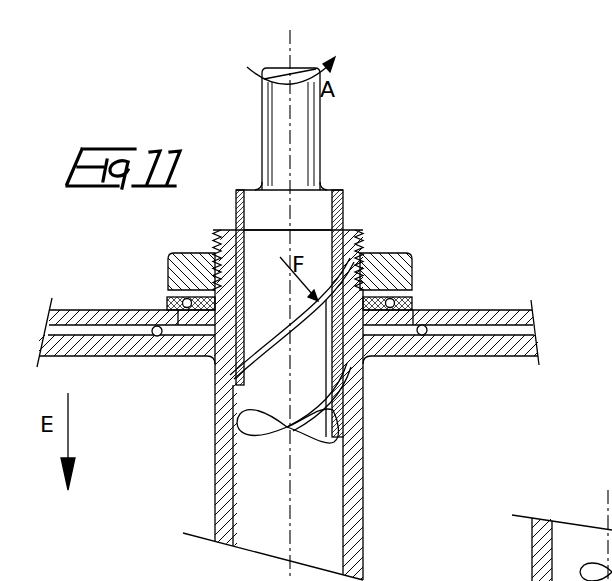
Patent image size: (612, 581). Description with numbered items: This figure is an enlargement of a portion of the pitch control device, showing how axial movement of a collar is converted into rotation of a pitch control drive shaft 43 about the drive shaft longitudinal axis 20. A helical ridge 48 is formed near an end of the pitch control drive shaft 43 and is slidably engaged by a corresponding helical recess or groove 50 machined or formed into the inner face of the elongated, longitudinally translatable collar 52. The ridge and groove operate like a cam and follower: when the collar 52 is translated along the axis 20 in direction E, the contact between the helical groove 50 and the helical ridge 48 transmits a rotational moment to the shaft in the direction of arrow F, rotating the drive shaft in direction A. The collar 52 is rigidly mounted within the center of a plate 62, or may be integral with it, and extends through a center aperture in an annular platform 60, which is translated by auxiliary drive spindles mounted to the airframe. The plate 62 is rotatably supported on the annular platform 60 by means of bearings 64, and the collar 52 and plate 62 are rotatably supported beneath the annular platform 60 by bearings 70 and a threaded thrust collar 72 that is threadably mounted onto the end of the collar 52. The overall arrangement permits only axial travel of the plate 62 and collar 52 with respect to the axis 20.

The drive shaft longitudinal axis 20 is at (292, 52).
The pitch control drive shaft 43 is at (305, 210).
The helical ridge 48 is at (262, 332).
The helical recess or groove 50 is at (232, 410).
The collar 52 is at (353, 444).
The annular platform 60 is at (508, 318).
The plate 62 is at (498, 340).
The bearings 64 is at (423, 338).
The bearings 70 is at (410, 302).
The threaded thrust collar 72 is at (388, 272).